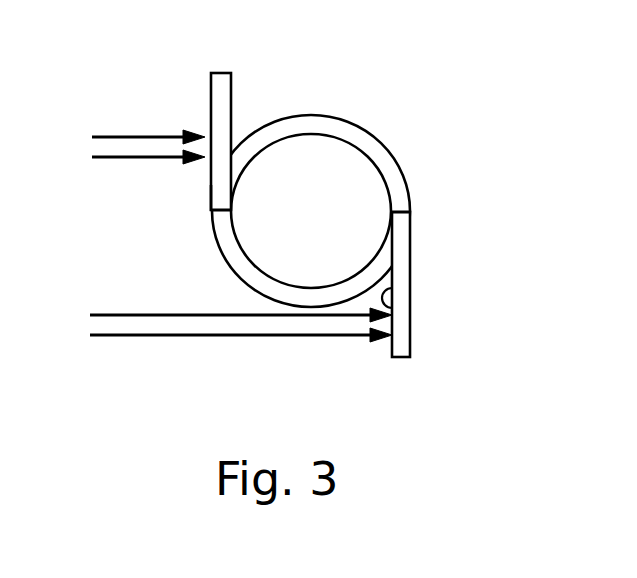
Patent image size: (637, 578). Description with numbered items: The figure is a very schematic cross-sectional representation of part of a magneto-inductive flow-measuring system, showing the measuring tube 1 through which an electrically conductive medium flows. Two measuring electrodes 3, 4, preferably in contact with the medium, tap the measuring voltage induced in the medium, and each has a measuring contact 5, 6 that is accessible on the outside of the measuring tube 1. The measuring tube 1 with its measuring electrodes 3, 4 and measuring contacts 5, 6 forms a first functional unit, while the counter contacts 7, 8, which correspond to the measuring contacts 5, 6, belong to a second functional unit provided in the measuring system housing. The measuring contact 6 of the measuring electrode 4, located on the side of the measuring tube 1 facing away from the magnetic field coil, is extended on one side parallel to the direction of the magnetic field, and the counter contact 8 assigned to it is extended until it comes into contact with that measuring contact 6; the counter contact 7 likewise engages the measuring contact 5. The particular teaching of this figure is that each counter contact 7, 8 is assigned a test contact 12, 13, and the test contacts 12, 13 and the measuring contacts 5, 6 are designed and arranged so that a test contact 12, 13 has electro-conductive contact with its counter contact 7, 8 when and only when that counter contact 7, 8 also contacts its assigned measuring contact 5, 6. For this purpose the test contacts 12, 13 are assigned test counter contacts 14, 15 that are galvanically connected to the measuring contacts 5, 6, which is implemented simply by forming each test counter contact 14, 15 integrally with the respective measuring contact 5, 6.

The measuring tube 1 is at (373, 147).
The measuring electrode 3 is at (222, 197).
The measuring electrode 4 is at (392, 230).
The measuring contact 5 is at (208, 183).
The measuring contact 6 is at (385, 308).
The counter contact 7 is at (133, 158).
The counter contact 8 is at (130, 312).
The test contact 12 is at (148, 136).
The test contact 13 is at (137, 337).
The test counter contact 14 is at (225, 93).
The test counter contact 15 is at (402, 345).